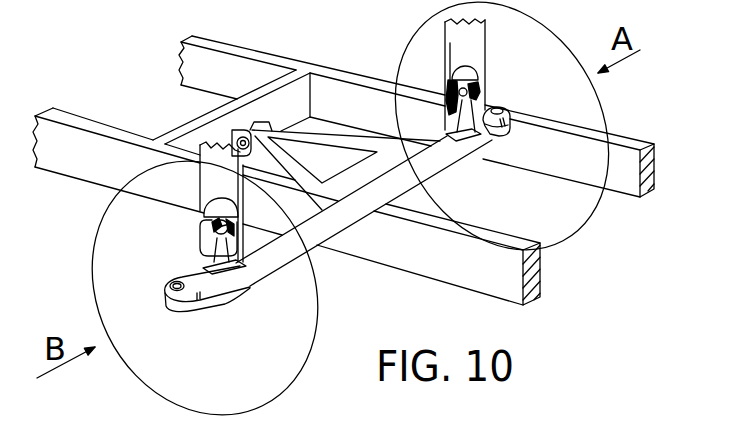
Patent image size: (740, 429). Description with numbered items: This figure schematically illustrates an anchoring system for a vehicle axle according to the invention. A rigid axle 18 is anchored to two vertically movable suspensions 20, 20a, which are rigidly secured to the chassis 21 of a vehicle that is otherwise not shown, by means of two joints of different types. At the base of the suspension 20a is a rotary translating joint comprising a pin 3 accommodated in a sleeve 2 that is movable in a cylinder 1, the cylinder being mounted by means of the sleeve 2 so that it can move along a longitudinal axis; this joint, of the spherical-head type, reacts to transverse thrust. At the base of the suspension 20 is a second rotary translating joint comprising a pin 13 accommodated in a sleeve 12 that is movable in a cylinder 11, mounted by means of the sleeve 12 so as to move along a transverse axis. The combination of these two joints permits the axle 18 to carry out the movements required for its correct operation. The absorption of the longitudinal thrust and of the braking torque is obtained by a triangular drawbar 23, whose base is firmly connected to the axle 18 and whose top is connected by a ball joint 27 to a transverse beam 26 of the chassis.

The cylinder 1 is at (212, 205).
The sleeve 2 is at (205, 210).
The pin 3 is at (233, 263).
The cylinder 11 is at (457, 72).
The sleeve 12 is at (480, 83).
The pin 13 is at (491, 135).
The rigid axle 18 is at (342, 222).
The suspension 20 is at (475, 46).
The suspension 20a is at (207, 178).
The frame rail 21 is at (513, 273).
The triangular drawbar 23 is at (338, 145).
The transverse beam 26 is at (200, 123).
The ball joint 27 is at (243, 141).